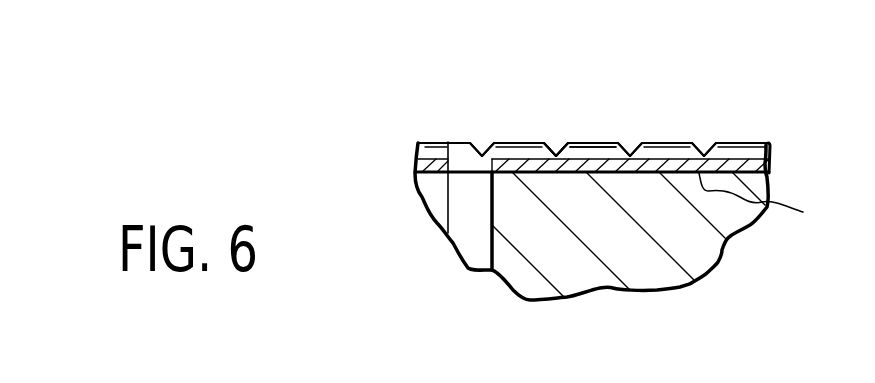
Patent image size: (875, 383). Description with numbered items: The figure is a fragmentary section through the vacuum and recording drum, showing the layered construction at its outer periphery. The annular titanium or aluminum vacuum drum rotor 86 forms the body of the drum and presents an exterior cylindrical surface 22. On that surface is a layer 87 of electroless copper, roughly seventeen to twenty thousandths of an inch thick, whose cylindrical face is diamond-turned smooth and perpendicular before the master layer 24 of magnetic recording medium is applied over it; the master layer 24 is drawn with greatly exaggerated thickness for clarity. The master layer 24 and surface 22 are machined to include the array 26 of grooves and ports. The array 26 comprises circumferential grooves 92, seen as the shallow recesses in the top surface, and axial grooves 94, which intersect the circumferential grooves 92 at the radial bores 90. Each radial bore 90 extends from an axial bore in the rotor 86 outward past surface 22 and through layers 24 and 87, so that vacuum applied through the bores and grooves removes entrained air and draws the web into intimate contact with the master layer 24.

The exterior cylindrical surface 22 is at (772, 201).
The master layer of magnetic recording medium 24 is at (747, 143).
The array of grooves and ports 26 is at (585, 74).
The vacuum drum rotor 86 is at (698, 245).
The layer of electroless copper 87 is at (417, 163).
The radial bores 90 is at (463, 201).
The circumferential grooves 92 is at (557, 152).
The axial grooves 94 is at (598, 143).